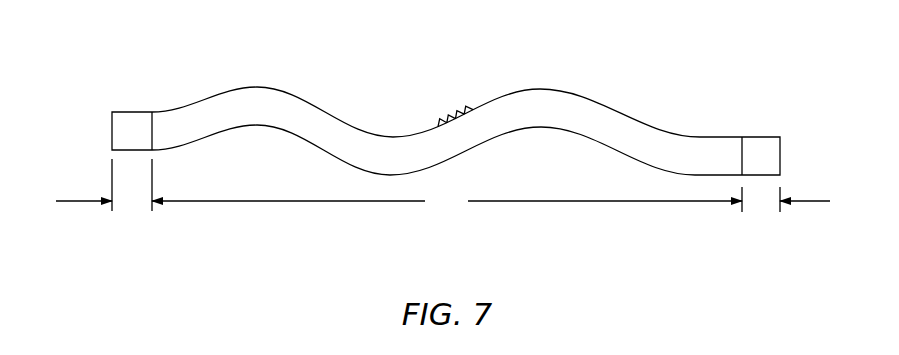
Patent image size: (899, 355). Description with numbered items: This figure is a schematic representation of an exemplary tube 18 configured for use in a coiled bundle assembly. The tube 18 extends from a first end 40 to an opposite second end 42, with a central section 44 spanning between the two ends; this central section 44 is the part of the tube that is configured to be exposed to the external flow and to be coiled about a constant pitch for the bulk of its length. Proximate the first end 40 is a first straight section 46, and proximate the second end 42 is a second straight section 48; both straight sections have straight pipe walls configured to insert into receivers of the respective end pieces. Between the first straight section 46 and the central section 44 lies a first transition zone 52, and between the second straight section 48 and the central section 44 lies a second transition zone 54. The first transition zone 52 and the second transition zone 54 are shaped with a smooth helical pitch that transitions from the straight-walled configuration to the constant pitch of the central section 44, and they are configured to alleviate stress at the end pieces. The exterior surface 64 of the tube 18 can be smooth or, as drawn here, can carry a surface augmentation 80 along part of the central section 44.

The first end 40 is at (93, 119).
The second end 42 is at (800, 156).
The central section 44 is at (380, 122).
The first straight section 46 is at (133, 112).
The second straight section 48 is at (757, 137).
The first transition zone 52 is at (163, 108).
The second transition zone 54 is at (723, 128).
The exterior surface 64 is at (253, 86).
The tube 18 is at (542, 88).
The surface augmentation 80 is at (452, 103).